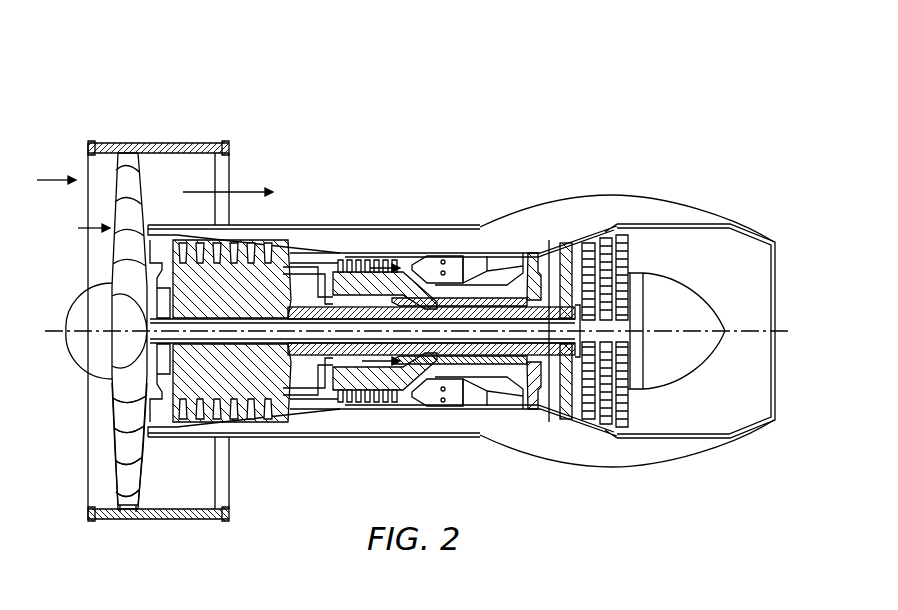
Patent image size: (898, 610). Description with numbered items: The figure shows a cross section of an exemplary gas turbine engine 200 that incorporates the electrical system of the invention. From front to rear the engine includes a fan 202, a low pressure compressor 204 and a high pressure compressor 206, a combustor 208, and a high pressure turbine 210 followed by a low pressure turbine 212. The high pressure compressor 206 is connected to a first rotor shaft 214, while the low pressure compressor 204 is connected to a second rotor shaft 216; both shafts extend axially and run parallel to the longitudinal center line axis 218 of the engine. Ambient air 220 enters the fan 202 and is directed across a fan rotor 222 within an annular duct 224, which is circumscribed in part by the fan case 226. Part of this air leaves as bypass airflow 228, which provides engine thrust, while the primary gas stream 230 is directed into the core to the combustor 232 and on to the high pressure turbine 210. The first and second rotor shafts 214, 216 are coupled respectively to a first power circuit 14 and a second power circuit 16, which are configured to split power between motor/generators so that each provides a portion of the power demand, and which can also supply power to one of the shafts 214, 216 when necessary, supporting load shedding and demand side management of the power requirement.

The first power circuit 14 is at (507, 283).
The second power circuit 16 is at (552, 310).
The gas turbine engine 200 is at (553, 72).
The fan 202 is at (80, 228).
The low pressure compressor 204 is at (255, 280).
The high pressure compressor 206 is at (370, 402).
The combustor 208 is at (455, 404).
The high pressure turbine 210 is at (533, 262).
The low pressure turbine 212 is at (625, 240).
The first rotor shaft 214 is at (477, 365).
The second rotor shaft 216 is at (550, 400).
The longitudinal center line axis 218 is at (790, 331).
The ambient air 220 is at (57, 173).
The fan rotor 222 is at (128, 497).
The annular duct 224 is at (214, 483).
The fan case 226 is at (173, 518).
The bypass airflow 228 is at (258, 192).
The primary gas stream 230 is at (328, 255).
The combustor 232 is at (452, 257).